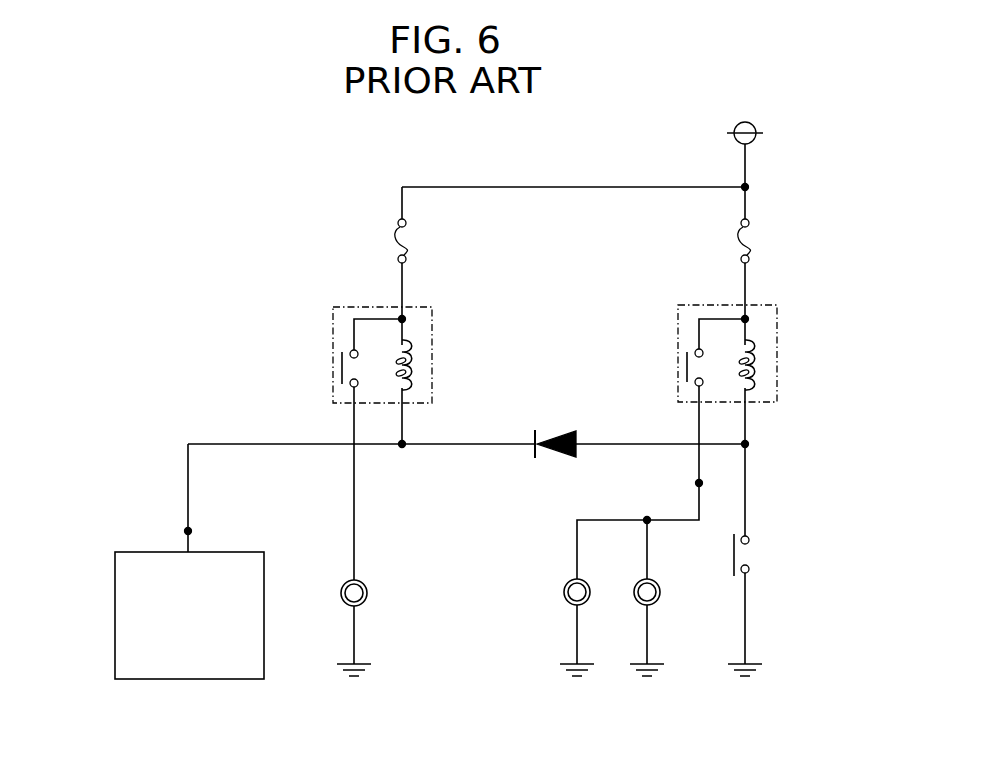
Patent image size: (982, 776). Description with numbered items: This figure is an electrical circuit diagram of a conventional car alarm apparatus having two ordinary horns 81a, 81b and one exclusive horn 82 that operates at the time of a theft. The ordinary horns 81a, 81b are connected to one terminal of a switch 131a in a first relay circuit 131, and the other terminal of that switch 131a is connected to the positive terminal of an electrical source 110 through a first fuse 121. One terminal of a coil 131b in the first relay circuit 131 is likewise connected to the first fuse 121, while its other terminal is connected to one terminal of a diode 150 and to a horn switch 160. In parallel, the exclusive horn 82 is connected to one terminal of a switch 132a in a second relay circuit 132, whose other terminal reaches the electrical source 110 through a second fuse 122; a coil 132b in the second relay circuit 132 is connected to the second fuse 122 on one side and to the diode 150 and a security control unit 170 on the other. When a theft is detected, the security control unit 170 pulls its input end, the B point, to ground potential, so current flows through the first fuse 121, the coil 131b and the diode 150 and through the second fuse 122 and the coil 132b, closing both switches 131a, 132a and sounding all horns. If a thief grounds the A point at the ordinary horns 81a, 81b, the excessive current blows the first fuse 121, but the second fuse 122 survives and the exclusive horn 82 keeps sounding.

The electrical source 110 is at (757, 129).
The first fuse 121 is at (756, 236).
The second fuse 122 is at (411, 243).
The first relay circuit 131 is at (770, 303).
The switch 131a is at (690, 343).
The coil 131b is at (750, 348).
The second relay circuit 132 is at (358, 304).
The switch 132a is at (347, 345).
The coil 132b is at (405, 348).
The diode 150 is at (545, 425).
The horn switch 160 is at (757, 555).
The security control unit 170 is at (114, 602).
The exclusive horn 82 is at (370, 585).
The ordinary horn 81a is at (662, 595).
The ordinary horn 81b is at (567, 580).
The A point A is at (695, 483).
The B point B is at (183, 530).